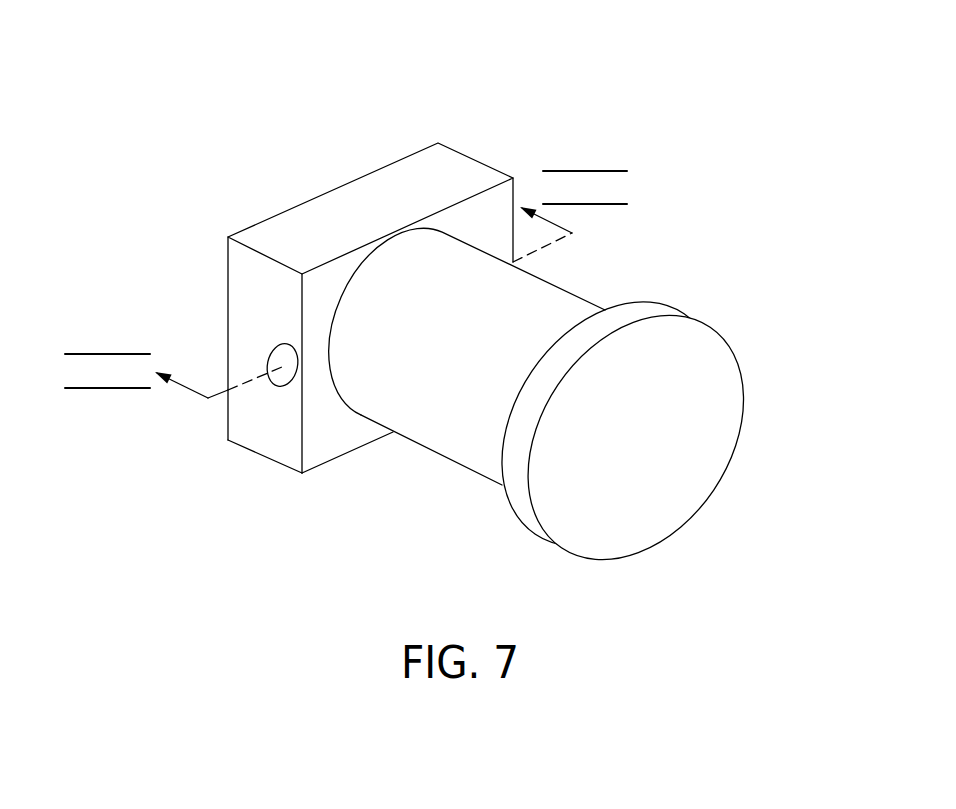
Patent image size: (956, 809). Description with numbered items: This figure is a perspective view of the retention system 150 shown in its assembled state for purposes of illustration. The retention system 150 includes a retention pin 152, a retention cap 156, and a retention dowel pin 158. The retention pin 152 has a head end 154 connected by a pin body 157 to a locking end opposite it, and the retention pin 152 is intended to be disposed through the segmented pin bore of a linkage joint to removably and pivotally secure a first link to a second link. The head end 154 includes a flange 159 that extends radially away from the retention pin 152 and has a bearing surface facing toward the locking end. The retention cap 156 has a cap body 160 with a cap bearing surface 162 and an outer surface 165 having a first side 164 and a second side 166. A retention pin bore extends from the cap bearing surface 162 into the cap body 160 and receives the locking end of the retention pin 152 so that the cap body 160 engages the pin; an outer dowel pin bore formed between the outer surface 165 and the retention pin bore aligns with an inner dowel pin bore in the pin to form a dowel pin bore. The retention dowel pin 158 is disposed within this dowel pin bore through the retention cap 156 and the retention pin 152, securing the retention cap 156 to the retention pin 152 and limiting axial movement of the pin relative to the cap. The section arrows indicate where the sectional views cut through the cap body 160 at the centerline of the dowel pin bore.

The retention system 150 is at (476, 96).
The retention pin 152 is at (557, 315).
The head end 154 is at (712, 403).
The retention cap 156 is at (298, 237).
The pin body 157 is at (463, 420).
The retention dowel pin 158 is at (280, 387).
The flange 159 is at (523, 510).
The cap body 160 is at (382, 205).
The cap bearing surface 162 is at (328, 435).
The first side 164 is at (243, 282).
The outer surface 165 is at (252, 317).
The second side 166 is at (519, 165).